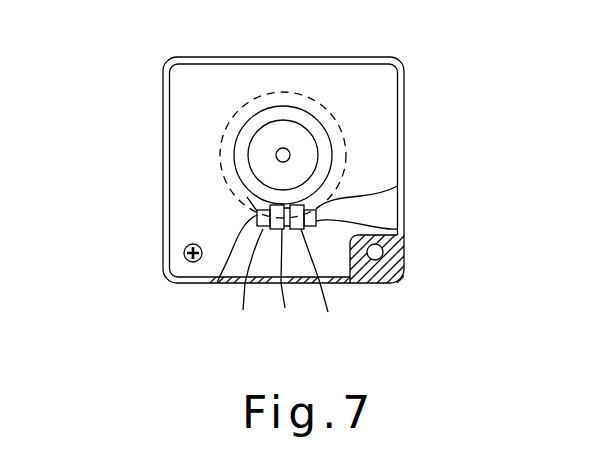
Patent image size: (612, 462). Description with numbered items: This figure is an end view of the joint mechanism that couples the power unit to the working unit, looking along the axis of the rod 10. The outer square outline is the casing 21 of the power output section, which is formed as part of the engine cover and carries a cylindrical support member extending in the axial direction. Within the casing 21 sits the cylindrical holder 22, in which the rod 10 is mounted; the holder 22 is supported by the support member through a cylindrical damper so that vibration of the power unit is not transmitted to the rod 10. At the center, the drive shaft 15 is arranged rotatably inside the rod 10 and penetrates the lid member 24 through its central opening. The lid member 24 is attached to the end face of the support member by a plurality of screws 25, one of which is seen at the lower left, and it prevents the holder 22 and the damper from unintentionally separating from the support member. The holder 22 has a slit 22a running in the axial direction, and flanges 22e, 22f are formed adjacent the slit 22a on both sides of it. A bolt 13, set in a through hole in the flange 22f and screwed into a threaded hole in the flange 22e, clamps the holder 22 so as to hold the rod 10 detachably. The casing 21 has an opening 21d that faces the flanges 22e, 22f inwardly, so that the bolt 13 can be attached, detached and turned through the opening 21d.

The rod 10 is at (235, 157).
The bolt 13 is at (404, 227).
The drive shaft 15 is at (284, 148).
The casing 21 is at (404, 83).
The opening 21d is at (404, 198).
The holder 22 is at (343, 150).
The slit 22a is at (291, 285).
The flange 22e is at (235, 287).
The flange 22f is at (333, 285).
The lid member 24 is at (186, 95).
The screw 25 is at (184, 253).